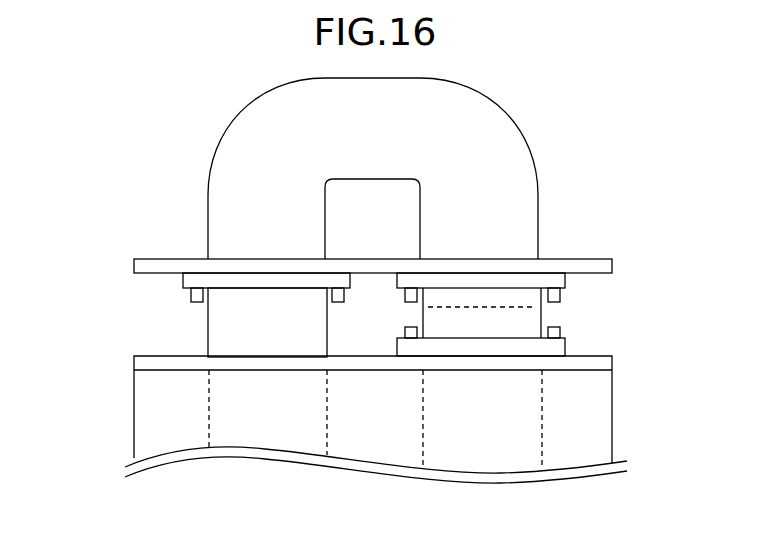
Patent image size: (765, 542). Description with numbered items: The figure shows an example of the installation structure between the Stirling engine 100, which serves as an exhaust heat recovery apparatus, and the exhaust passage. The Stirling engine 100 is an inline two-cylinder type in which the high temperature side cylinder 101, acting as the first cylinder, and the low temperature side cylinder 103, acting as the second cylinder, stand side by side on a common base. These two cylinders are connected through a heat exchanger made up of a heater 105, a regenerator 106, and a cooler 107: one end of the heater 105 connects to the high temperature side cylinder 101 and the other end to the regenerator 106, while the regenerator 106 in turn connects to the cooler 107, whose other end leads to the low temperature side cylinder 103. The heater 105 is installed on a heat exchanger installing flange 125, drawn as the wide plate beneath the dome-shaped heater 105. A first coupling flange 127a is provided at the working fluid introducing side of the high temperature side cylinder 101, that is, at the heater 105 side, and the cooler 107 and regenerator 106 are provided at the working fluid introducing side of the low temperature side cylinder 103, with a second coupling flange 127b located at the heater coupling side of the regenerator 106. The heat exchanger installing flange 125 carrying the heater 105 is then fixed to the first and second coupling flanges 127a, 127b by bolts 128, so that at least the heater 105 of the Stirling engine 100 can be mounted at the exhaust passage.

The Stirling engine 100 is at (109, 391).
The high temperature side cylinder 101 is at (220, 427).
The low temperature side cylinder 103 is at (530, 410).
The heater 105 is at (502, 122).
The regenerator 106 is at (540, 302).
The cooler 107 is at (442, 306).
The heat exchanger installing flange 125 is at (590, 260).
The first coupling flange 127a is at (185, 282).
The second coupling flange 127b is at (563, 279).
The bolts 128 is at (191, 300).